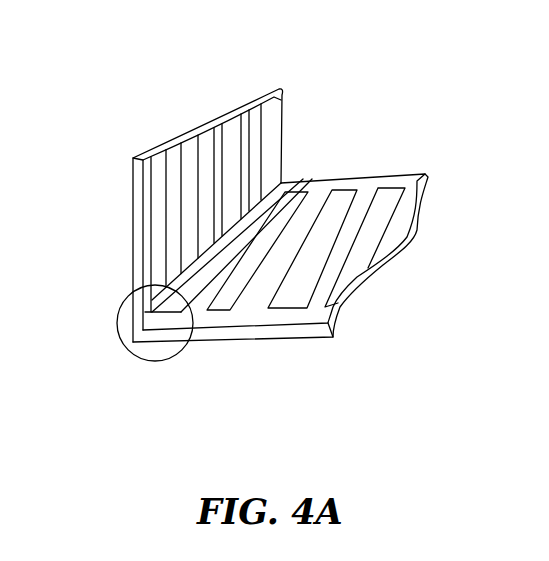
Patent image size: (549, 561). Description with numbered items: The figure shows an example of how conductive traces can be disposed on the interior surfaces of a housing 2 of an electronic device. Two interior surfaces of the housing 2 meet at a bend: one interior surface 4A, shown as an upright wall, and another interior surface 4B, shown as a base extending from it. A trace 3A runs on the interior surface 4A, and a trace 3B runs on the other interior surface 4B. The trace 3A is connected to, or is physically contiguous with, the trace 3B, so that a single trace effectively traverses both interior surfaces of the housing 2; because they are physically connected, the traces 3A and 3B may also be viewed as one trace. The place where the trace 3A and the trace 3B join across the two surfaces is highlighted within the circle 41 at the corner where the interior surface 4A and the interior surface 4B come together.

The housing 2 is at (263, 234).
The trace 3A is at (143, 215).
The trace 3B is at (216, 300).
The interior surface 4A is at (273, 112).
The interior surface 4B is at (321, 190).
The circle 41 is at (118, 322).